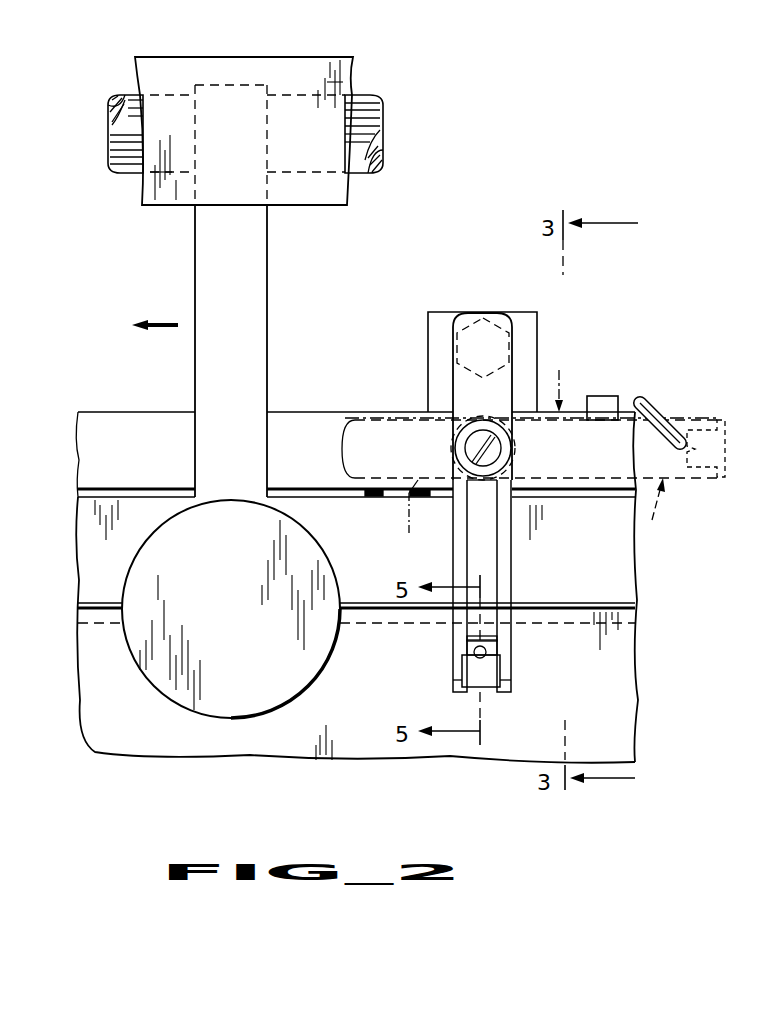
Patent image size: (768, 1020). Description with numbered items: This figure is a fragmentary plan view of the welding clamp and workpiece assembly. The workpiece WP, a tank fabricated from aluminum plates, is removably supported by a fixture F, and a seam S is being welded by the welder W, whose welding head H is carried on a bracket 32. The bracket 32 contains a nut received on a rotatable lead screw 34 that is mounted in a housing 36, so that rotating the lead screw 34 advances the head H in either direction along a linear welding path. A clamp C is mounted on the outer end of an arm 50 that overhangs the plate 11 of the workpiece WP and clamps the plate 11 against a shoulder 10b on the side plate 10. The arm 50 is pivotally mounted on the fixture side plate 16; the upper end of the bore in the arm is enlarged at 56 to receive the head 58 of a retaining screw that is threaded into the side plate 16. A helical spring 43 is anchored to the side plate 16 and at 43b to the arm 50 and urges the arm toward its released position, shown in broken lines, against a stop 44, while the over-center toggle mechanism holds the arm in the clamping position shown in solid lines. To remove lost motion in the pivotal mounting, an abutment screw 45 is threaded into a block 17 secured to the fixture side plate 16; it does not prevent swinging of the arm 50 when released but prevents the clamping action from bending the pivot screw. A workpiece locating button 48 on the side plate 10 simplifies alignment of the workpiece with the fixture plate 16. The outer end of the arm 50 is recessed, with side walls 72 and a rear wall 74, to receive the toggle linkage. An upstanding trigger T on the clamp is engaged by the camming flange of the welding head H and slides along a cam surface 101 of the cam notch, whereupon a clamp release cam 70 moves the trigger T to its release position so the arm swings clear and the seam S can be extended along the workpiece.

The side plate 10 is at (636, 553).
The shoulder 10b is at (642, 607).
The plate 11 is at (630, 678).
The fixture side plate 16 is at (120, 418).
The block 17 is at (428, 312).
The bracket 32 is at (196, 256).
The lead screw 34 is at (370, 125).
The housing 36 is at (347, 70).
The helical spring 43 is at (452, 453).
The spring anchor point on clamp arm 43b is at (490, 492).
The stop 44 is at (604, 396).
The abutment screw 45 is at (497, 318).
The workpiece locating button 48 is at (385, 500).
The arm 50 is at (455, 535).
The enlarged upper end of bore 56 is at (512, 448).
The head 58 is at (462, 445).
The clamp release cam 70 is at (497, 681).
The side walls 72 is at (455, 677).
The rear wall 74 is at (468, 640).
The cam surface 101 is at (470, 650).
The welder W is at (276, 256).
The fixture F is at (284, 404).
The clamp C is at (522, 375).
The trigger T is at (642, 400).
The seam S is at (100, 605).
The welding head H is at (240, 622).
The workpiece WP is at (645, 717).